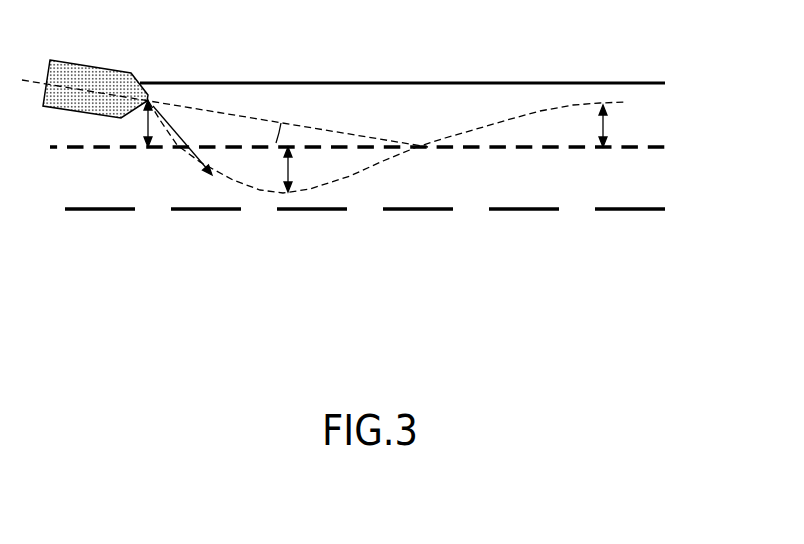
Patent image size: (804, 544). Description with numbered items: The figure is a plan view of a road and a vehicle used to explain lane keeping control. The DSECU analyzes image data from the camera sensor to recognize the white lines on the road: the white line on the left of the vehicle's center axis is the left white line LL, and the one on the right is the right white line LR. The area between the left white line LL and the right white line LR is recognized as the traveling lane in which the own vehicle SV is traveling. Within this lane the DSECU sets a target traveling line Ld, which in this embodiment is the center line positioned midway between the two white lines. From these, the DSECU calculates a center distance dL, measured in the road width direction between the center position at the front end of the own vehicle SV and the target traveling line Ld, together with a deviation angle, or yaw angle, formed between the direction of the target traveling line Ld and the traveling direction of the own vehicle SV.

The own vehicle SV is at (90, 66).
The left white line LL is at (635, 81).
The target traveling line Ld is at (637, 144).
The right white line LR is at (610, 211).
The center distance dL is at (145, 128).